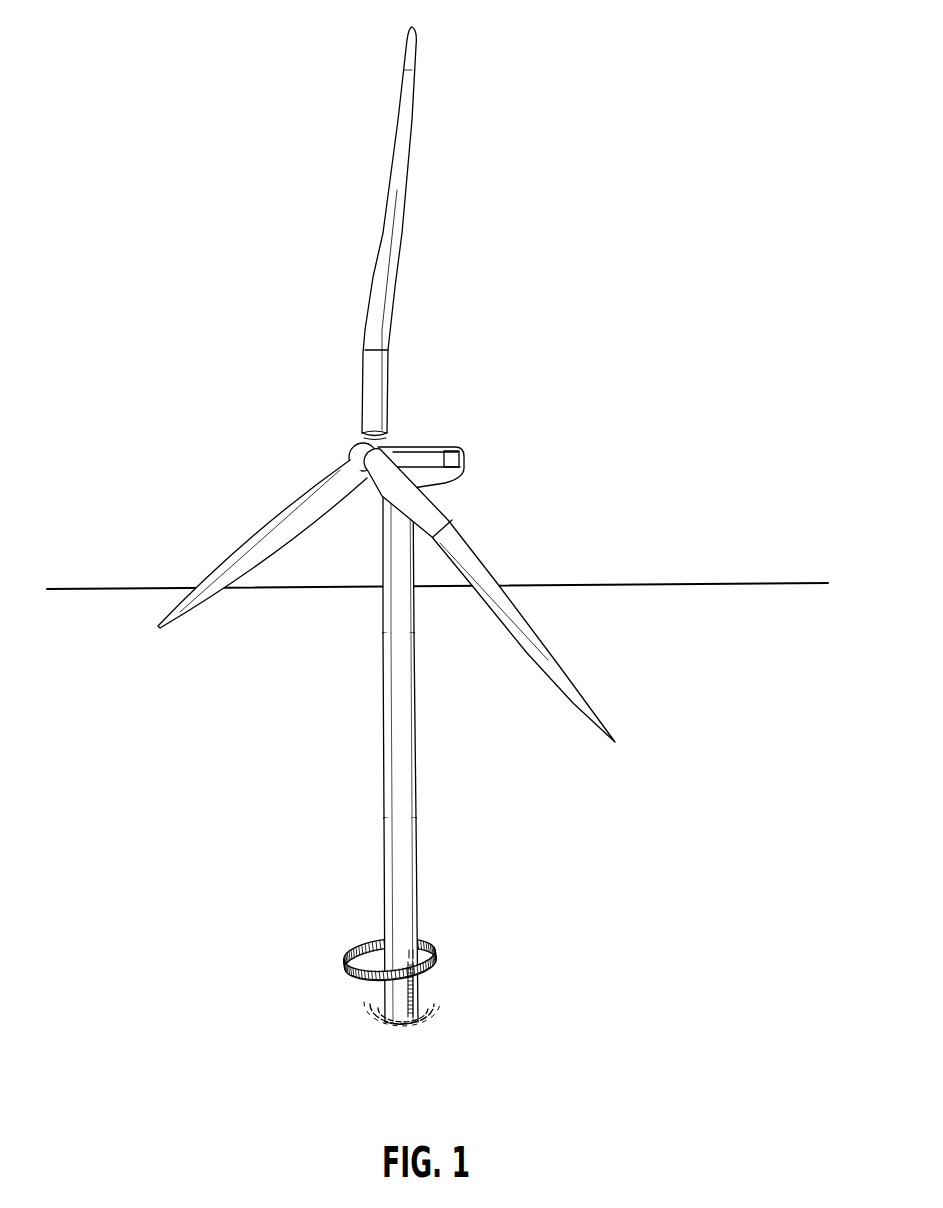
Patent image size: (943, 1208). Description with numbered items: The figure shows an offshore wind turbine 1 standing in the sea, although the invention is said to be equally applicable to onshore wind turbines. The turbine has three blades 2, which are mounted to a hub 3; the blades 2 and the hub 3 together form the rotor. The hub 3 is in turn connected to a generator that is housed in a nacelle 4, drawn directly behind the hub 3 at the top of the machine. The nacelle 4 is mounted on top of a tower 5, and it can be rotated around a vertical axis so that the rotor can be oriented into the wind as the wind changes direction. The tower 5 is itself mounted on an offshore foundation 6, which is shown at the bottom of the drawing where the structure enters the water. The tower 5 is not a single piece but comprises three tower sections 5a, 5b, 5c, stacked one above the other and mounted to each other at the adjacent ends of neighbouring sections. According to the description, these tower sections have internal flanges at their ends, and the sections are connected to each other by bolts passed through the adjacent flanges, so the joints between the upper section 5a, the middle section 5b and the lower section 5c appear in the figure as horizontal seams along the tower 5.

The offshore wind turbine 1 is at (284, 258).
The blades 2 is at (376, 276).
The hub 3 is at (350, 450).
The nacelle 4 is at (442, 446).
The tower 5 is at (383, 765).
The tower section 5a is at (404, 586).
The tower section 5b is at (406, 734).
The tower section 5c is at (409, 905).
The offshore foundation 6 is at (390, 998).